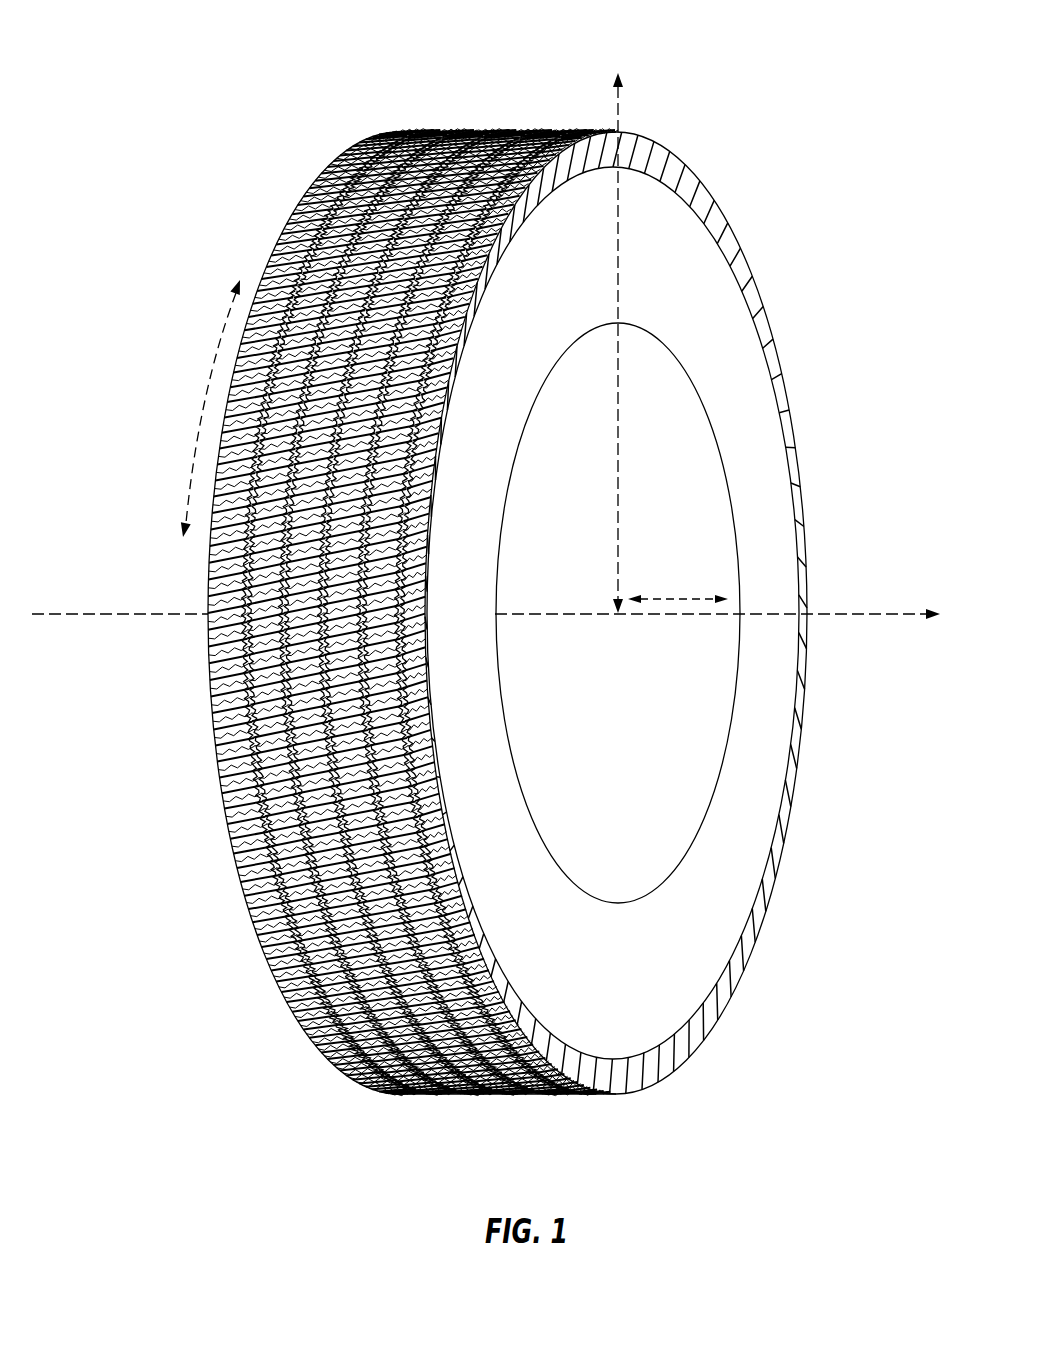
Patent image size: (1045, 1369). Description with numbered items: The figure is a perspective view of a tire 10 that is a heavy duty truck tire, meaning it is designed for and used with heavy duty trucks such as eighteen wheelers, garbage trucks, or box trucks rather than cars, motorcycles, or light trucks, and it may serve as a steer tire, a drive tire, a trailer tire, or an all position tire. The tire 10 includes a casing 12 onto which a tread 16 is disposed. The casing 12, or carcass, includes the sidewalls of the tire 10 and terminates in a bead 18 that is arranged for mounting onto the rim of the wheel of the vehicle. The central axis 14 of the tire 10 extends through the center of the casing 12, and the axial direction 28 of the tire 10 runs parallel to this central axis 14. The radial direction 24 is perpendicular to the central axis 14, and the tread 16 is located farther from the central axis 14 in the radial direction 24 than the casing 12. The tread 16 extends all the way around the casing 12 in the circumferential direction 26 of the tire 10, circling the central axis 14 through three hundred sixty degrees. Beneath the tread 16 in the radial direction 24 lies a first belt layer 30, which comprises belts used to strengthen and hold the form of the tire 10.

The tire 10 is at (281, 62).
The casing 12 is at (736, 322).
The central axis 14 is at (868, 614).
The tread 16 is at (356, 792).
The bead 18 is at (706, 808).
The radial direction 24 is at (622, 112).
The circumferential direction 26 is at (203, 397).
The axial direction 28 is at (681, 598).
The first belt layer 30 is at (260, 548).